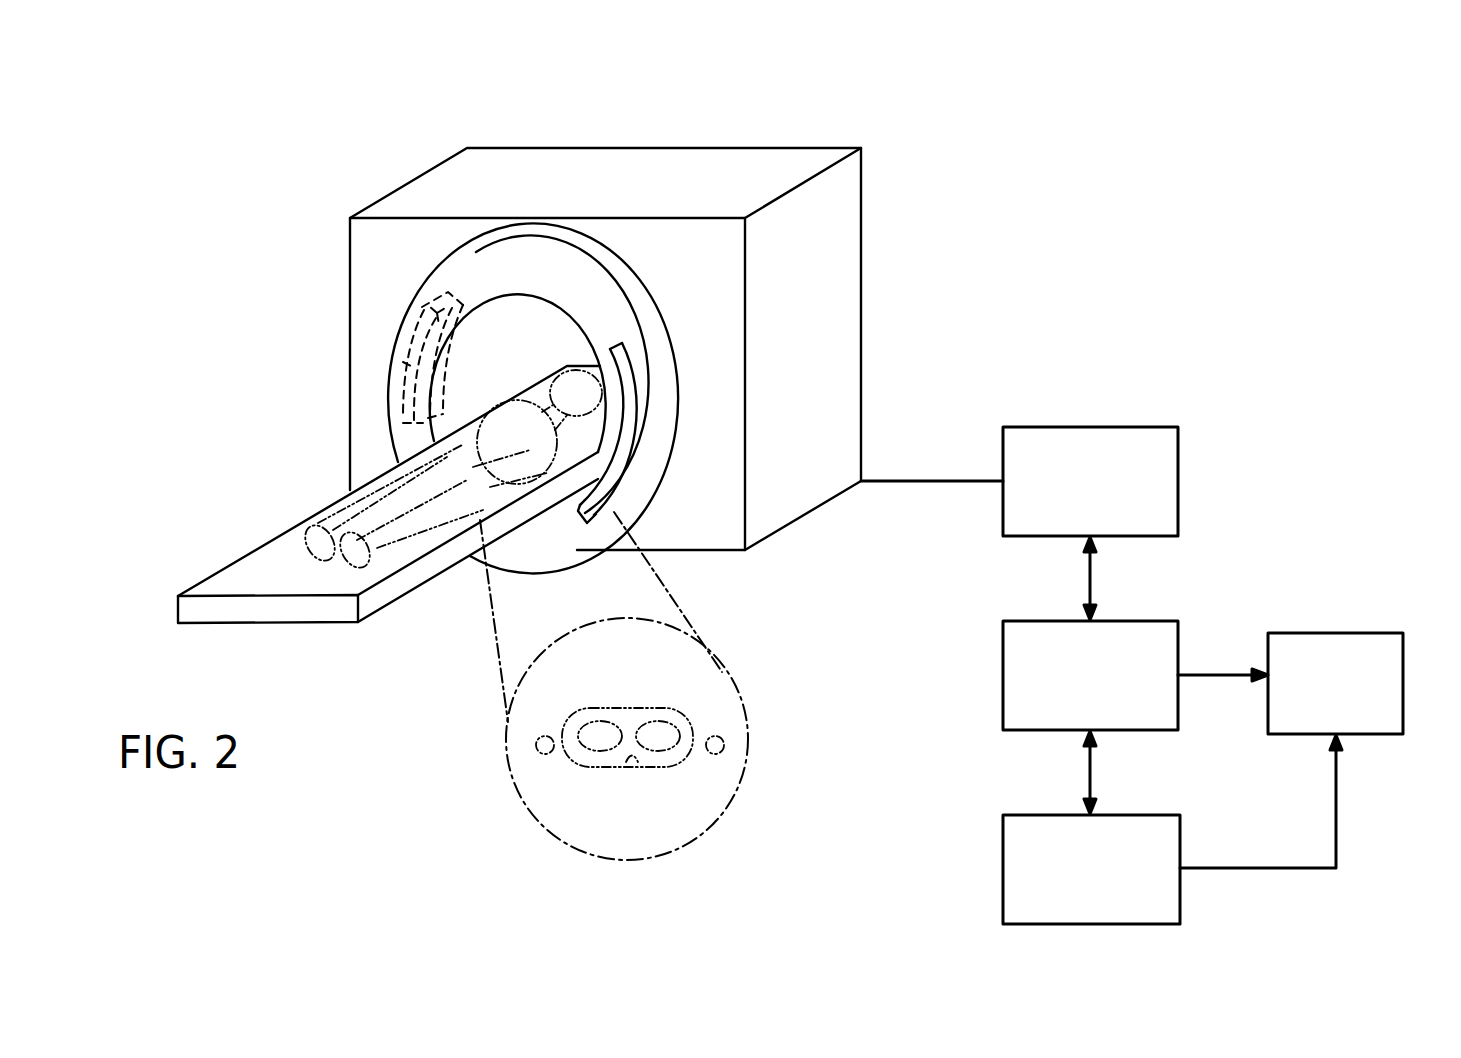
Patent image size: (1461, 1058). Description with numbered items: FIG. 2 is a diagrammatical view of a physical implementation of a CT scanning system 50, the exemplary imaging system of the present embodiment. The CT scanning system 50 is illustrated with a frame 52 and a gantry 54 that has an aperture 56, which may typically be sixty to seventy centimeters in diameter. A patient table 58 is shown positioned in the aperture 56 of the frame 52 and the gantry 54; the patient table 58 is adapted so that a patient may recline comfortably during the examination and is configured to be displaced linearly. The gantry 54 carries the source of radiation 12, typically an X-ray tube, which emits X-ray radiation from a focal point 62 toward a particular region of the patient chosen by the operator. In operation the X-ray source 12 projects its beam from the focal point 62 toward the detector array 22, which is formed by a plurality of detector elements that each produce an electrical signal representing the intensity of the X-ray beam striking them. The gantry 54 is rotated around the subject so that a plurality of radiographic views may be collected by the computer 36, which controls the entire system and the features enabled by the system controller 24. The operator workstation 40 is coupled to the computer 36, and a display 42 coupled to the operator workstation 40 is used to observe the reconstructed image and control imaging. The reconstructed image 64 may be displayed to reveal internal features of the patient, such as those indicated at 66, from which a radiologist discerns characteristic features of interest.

The source of radiation 12 is at (403, 358).
The detector array 22 is at (621, 421).
The system controller 24 is at (1180, 480).
The computer 36 is at (1003, 676).
The operator workstation 40 is at (1003, 856).
The display 42 is at (1403, 668).
The CT scanning system 50 is at (803, 112).
The frame 52 is at (846, 233).
The gantry 54 is at (513, 257).
The aperture 56 is at (534, 327).
The patient table 58 is at (318, 607).
The focal point 62 is at (415, 320).
The image 64 is at (735, 788).
The internal features 66 is at (688, 720).